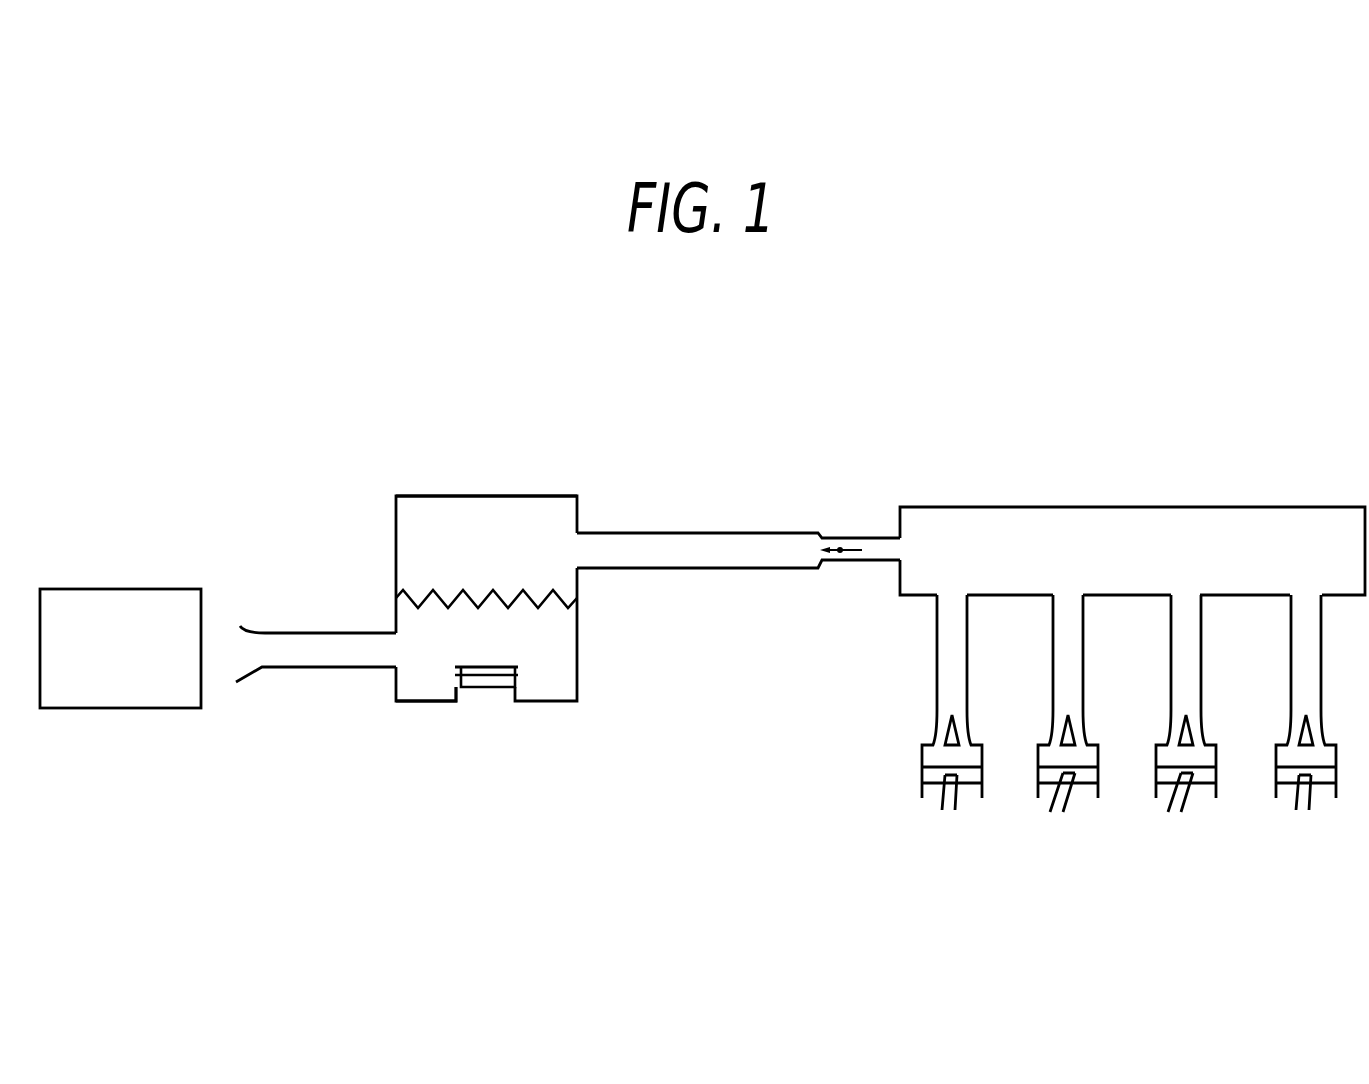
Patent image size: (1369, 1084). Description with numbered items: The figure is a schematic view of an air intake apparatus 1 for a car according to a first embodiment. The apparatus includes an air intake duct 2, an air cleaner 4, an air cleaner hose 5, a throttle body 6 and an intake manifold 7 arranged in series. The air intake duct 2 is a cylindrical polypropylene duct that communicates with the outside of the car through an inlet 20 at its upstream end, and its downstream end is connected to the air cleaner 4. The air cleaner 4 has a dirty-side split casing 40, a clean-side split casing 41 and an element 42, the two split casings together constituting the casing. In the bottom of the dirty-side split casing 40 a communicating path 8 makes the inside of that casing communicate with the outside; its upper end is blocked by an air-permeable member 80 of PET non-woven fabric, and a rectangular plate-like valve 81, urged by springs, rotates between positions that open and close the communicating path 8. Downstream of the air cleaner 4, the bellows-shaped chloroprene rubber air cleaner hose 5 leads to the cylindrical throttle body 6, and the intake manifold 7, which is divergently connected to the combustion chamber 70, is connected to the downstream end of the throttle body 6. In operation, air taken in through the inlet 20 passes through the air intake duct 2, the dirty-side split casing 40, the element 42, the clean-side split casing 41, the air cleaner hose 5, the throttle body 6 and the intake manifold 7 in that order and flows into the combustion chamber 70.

The air intake apparatus 1 is at (1050, 390).
The air intake duct 2 is at (300, 667).
The air cleaner 4 is at (554, 486).
The air cleaner hose 5 is at (737, 568).
The throttle body 6 is at (860, 537).
The intake manifold 7 is at (1137, 507).
The communicating path 8 is at (530, 675).
The inlet 20 is at (240, 627).
The dirty-side split casing 40 is at (425, 701).
The clean-side split casing 41 is at (490, 496).
The element 42 is at (577, 598).
The combustion chamber 70 is at (897, 760).
The air-permeable member 80 is at (488, 667).
The valve 81 is at (488, 688).